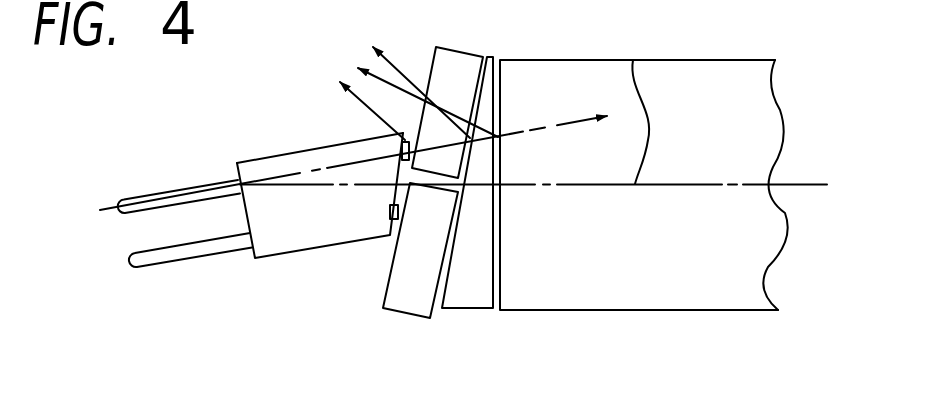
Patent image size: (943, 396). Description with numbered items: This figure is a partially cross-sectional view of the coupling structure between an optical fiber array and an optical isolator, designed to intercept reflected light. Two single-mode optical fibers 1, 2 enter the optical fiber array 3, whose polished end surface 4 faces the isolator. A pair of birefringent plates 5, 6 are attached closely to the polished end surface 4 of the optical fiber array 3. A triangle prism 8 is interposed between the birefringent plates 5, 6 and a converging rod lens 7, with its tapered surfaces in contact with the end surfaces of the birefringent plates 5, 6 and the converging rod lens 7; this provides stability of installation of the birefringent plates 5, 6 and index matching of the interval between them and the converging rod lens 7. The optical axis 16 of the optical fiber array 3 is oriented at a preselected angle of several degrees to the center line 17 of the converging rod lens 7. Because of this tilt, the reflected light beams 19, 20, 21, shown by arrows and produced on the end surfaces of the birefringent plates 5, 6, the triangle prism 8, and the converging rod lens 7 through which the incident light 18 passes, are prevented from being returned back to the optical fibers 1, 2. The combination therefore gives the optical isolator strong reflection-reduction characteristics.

The single-mode optical fiber 1 is at (184, 188).
The single-mode optical fiber 2 is at (183, 253).
The optical fiber array 3 is at (292, 233).
The polished end surface 4 is at (390, 198).
The birefringent plate 5 is at (463, 65).
The birefringent plate 6 is at (408, 288).
The converging rod lens 7 is at (745, 78).
The triangle prism 8 is at (470, 283).
The optical axis 16 is at (290, 175).
The center line 17 is at (633, 60).
The incident light 18 is at (570, 118).
The reflected light beam 19 is at (367, 115).
The reflected light beam 20 is at (410, 62).
The reflected light beam 21 is at (377, 72).